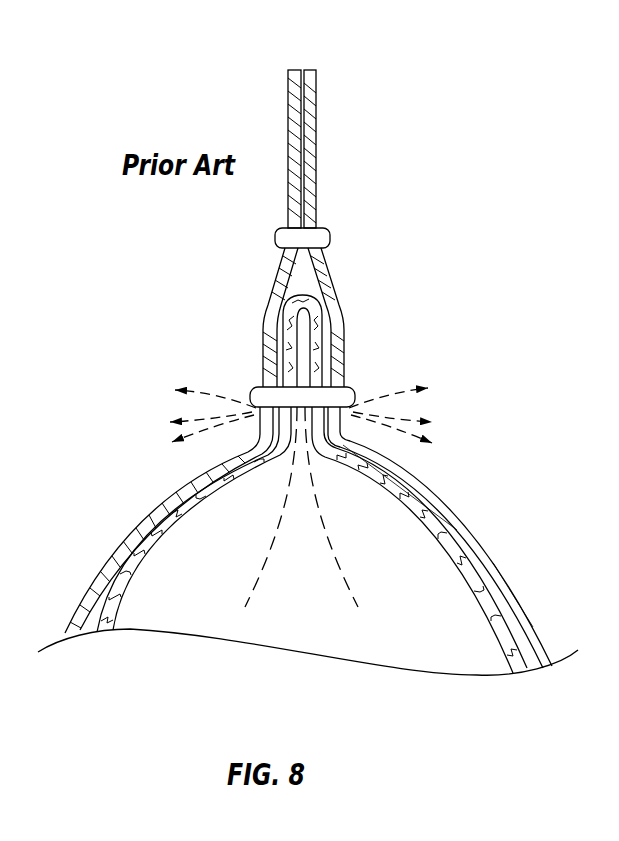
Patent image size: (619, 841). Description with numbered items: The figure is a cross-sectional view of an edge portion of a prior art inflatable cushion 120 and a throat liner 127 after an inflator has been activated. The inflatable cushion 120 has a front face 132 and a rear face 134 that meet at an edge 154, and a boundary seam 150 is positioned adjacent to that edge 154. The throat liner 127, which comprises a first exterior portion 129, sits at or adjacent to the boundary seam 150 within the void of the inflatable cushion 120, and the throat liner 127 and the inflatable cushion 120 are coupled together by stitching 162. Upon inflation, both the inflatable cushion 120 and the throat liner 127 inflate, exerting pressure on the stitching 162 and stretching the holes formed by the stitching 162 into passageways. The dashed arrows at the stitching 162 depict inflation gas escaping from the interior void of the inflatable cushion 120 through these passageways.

The edge 154 is at (303, 62).
The boundary seam 150 is at (320, 237).
The first exterior portion 129 is at (307, 293).
The stitching 162 is at (348, 397).
The rear face 134 is at (138, 527).
The throat liner 127 is at (473, 583).
The front face 132 is at (533, 630).
The inflatable cushion 120 is at (472, 491).